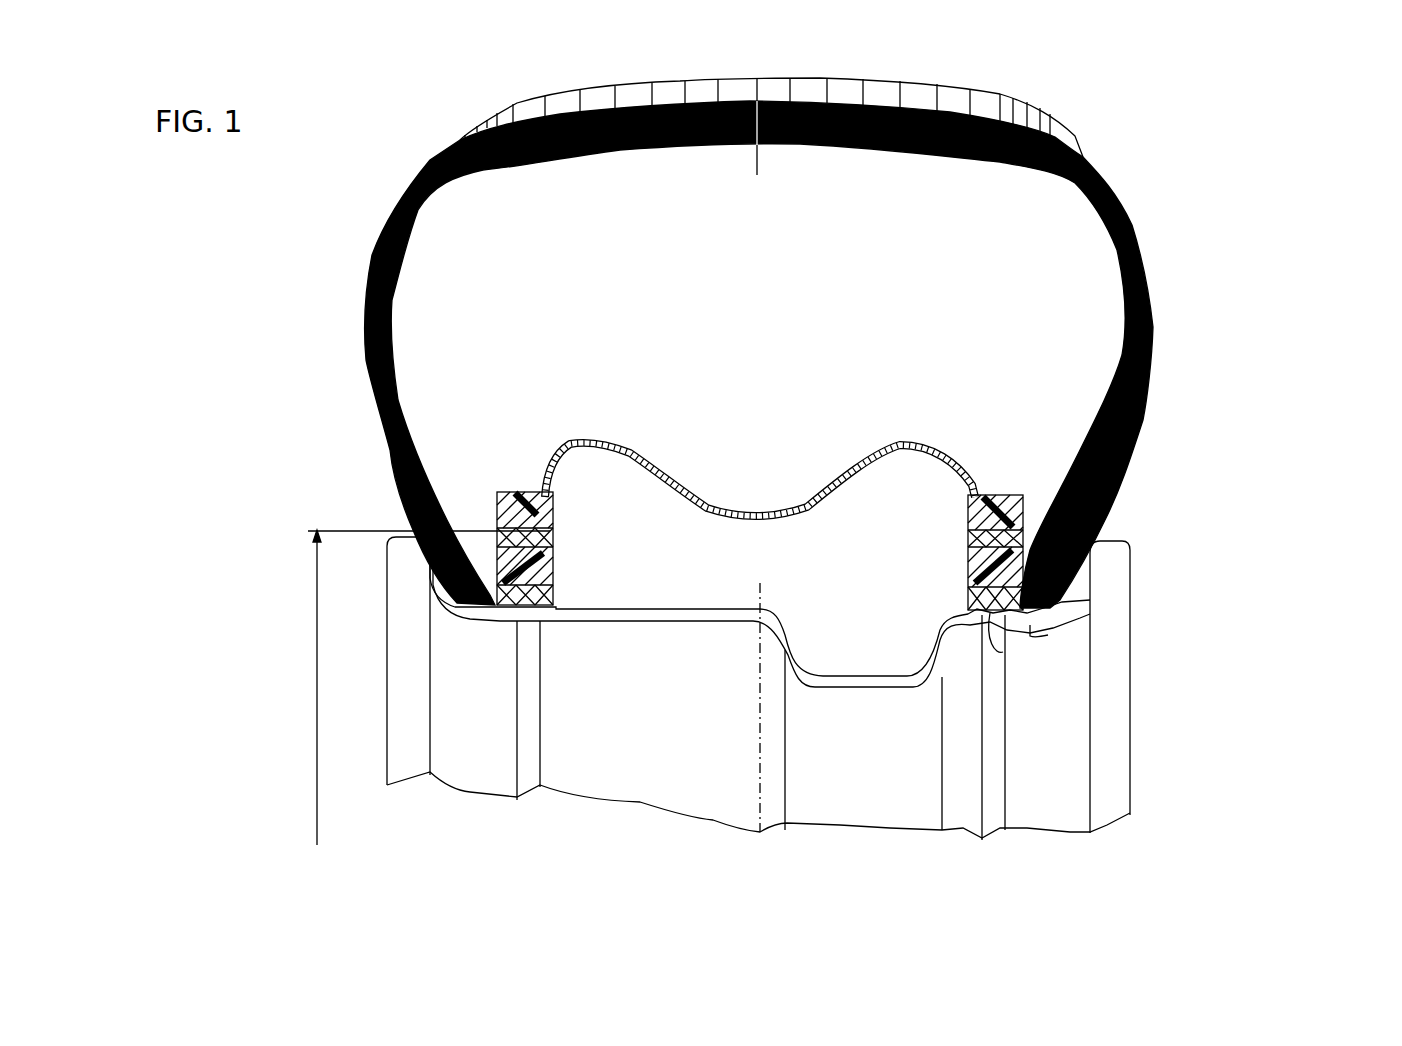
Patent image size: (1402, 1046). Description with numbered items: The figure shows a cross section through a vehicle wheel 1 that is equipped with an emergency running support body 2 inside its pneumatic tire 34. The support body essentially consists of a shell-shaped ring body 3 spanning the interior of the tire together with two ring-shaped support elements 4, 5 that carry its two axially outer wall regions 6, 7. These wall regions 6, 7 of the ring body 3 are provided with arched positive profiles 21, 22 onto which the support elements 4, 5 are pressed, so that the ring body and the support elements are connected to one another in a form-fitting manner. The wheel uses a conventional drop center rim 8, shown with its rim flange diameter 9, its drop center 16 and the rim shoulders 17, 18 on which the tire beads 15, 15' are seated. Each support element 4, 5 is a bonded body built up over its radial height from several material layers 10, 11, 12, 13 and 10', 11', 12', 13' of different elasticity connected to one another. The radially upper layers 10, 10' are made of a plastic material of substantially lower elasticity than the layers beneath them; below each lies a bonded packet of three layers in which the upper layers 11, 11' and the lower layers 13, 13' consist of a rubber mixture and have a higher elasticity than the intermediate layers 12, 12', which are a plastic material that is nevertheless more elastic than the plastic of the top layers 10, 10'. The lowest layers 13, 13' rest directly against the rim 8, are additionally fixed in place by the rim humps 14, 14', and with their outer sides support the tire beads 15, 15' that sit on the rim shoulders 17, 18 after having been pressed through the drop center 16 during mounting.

The vehicle wheel 1 is at (849, 321).
The emergency running support body 2 is at (843, 422).
The shell-shaped ring body 3 is at (893, 452).
The support element 4 is at (567, 520).
The support element 5 is at (950, 560).
The axially outer wall region 6 is at (1003, 474).
The axially outer wall region 7 is at (499, 472).
The drop center rim 8 is at (903, 762).
The rim flange diameter 9 is at (317, 795).
The material layer 10 is at (336, 525).
The material layer 11 is at (281, 551).
The material layer 12 is at (310, 626).
The material layer 13 is at (320, 647).
The rim hump 14 is at (487, 763).
The tire bead 15 is at (306, 579).
The drop center 16 is at (1090, 628).
The rim shoulder 17 is at (495, 623).
The rim shoulder 18 is at (1035, 627).
The arched positive profile 21 is at (527, 505).
The arched positive profile 22 is at (1033, 512).
The pneumatic tire 34 is at (1088, 150).
The material layer 10' is at (1204, 434).
The material layer 11' is at (1220, 456).
The material layer 12' is at (1228, 476).
The material layer 13' is at (1189, 536).
The rim hump 14' is at (1224, 568).
The tire bead 15' is at (1165, 518).